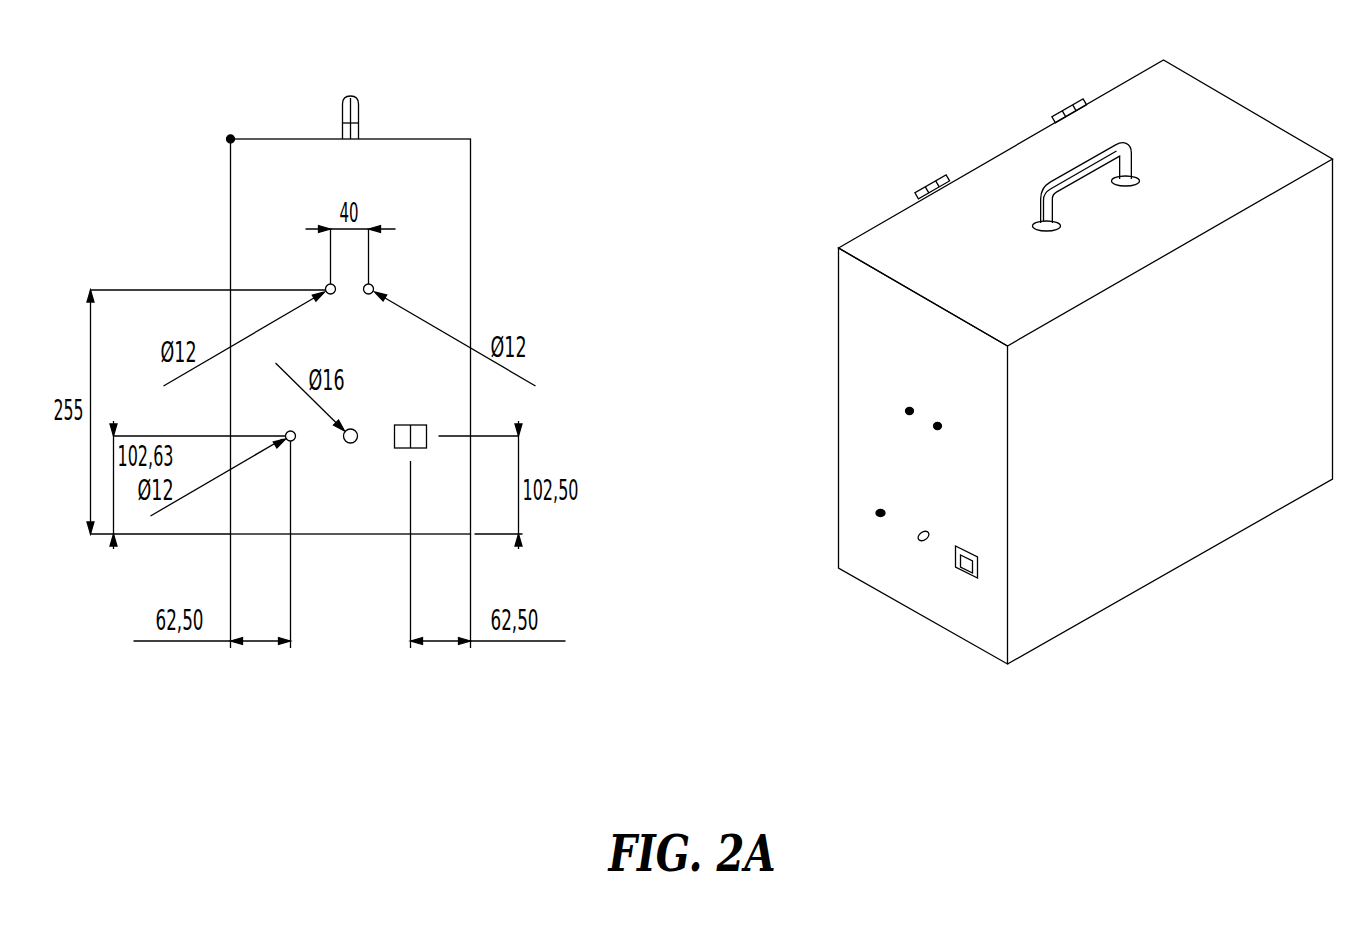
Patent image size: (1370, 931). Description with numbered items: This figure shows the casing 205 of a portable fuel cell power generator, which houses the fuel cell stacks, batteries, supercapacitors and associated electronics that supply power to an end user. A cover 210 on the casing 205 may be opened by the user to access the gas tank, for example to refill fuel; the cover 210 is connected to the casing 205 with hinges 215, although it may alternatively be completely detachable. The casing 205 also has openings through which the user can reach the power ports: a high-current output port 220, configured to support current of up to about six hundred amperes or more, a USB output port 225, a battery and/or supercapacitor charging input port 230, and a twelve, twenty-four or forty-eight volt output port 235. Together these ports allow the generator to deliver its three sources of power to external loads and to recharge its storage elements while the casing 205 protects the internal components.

The casing 205 is at (1175, 470).
The cover 210 is at (1218, 138).
The hinges 215 is at (1048, 99).
The high-current output port 220 is at (898, 400).
The USB output port 225 is at (864, 515).
The charging input port 230 is at (909, 552).
The output port 235 is at (968, 572).